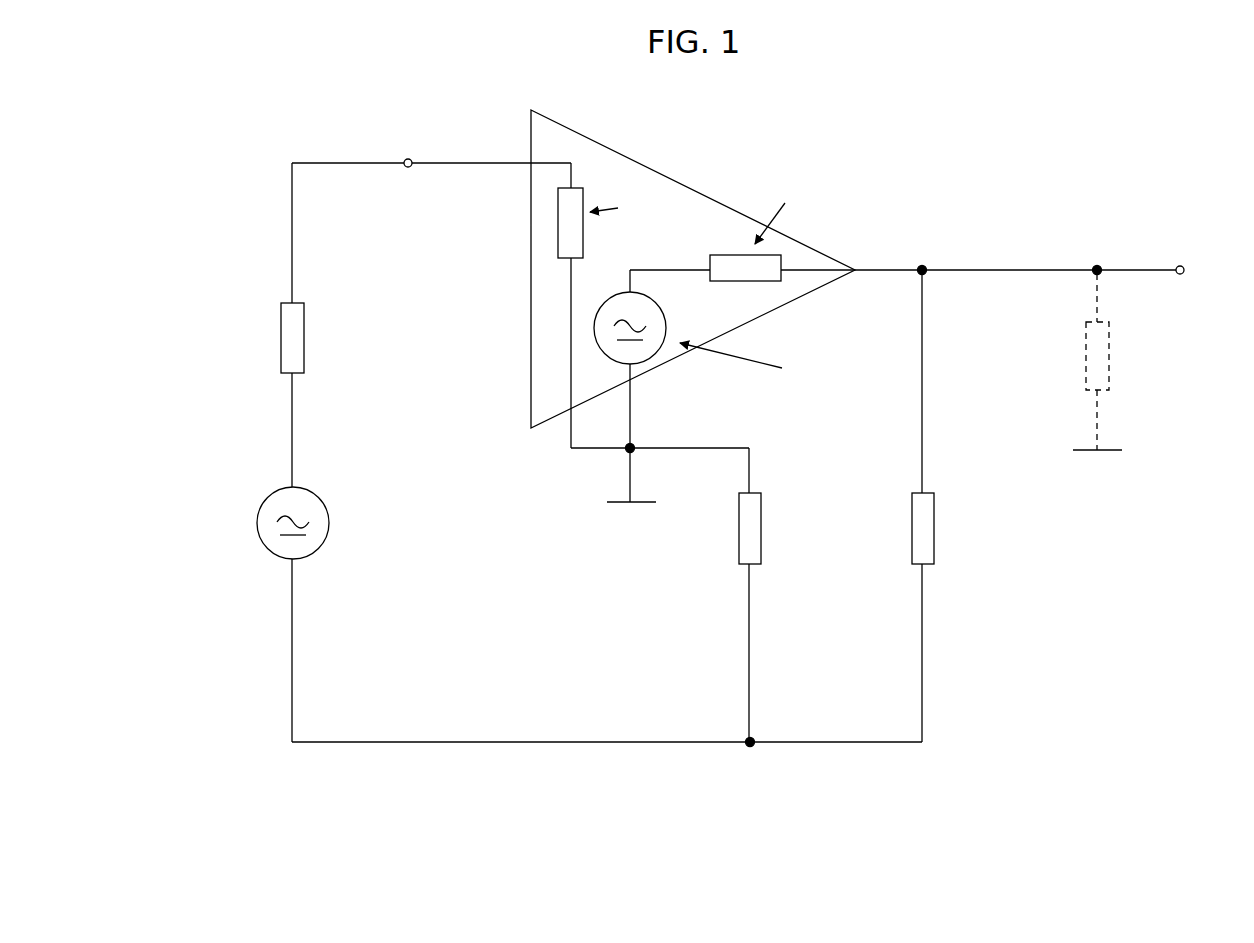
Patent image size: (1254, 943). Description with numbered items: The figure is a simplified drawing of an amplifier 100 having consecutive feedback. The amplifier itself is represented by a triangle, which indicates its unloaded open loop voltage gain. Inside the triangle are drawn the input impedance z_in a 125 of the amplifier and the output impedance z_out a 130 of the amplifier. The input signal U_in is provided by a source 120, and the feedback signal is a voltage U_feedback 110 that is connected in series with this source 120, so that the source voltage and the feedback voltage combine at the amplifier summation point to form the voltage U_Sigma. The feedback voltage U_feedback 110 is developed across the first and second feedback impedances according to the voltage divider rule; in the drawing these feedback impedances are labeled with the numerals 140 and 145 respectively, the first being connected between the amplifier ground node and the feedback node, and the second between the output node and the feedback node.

The amplifier 100 is at (1007, 100).
The feedback voltage U_feedback 110 is at (403, 742).
The source 120 is at (265, 502).
The input impedance z_in a 125 is at (575, 197).
The output impedance z_out a 130 is at (772, 262).
The feedback impedance Z1 140 is at (738, 535).
The feedback impedance Z2 145 is at (912, 530).